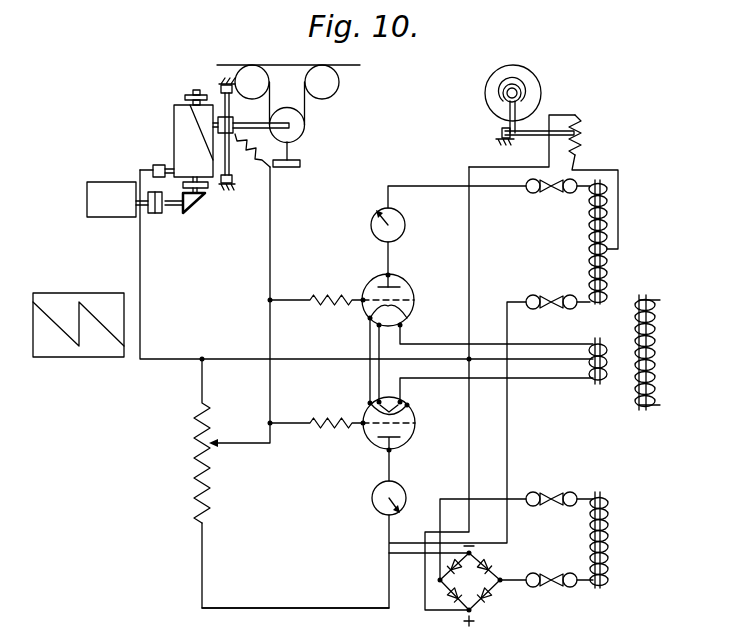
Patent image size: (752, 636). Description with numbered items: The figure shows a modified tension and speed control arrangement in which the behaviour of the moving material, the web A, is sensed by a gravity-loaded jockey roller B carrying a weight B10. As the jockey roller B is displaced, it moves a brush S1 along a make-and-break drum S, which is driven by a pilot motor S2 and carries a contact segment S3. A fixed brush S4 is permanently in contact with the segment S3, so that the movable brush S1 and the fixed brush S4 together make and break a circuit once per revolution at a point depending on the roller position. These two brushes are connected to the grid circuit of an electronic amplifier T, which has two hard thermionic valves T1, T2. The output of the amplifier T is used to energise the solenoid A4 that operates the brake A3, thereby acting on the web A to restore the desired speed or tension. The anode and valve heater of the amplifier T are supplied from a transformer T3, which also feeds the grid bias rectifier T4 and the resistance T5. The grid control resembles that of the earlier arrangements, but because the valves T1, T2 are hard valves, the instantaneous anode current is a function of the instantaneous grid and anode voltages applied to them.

The brush S1 is at (183, 100).
The make-and-break drum S is at (173, 113).
The contact segment S3 is at (190, 150).
The fixed brush S4 is at (153, 166).
The pilot motor S2 is at (95, 192).
The jockey roller B is at (305, 125).
The weight B10 is at (300, 162).
The brake A3 is at (527, 88).
The solenoid A4 is at (577, 147).
The electronic amplifier T is at (373, 262).
The thermionic valve T1 is at (402, 283).
The thermionic valve T2 is at (410, 408).
The transformer T3 is at (622, 303).
The grid bias rectifier T4 is at (482, 580).
The resistance T5 is at (196, 463).
The web A is at (173, 635).